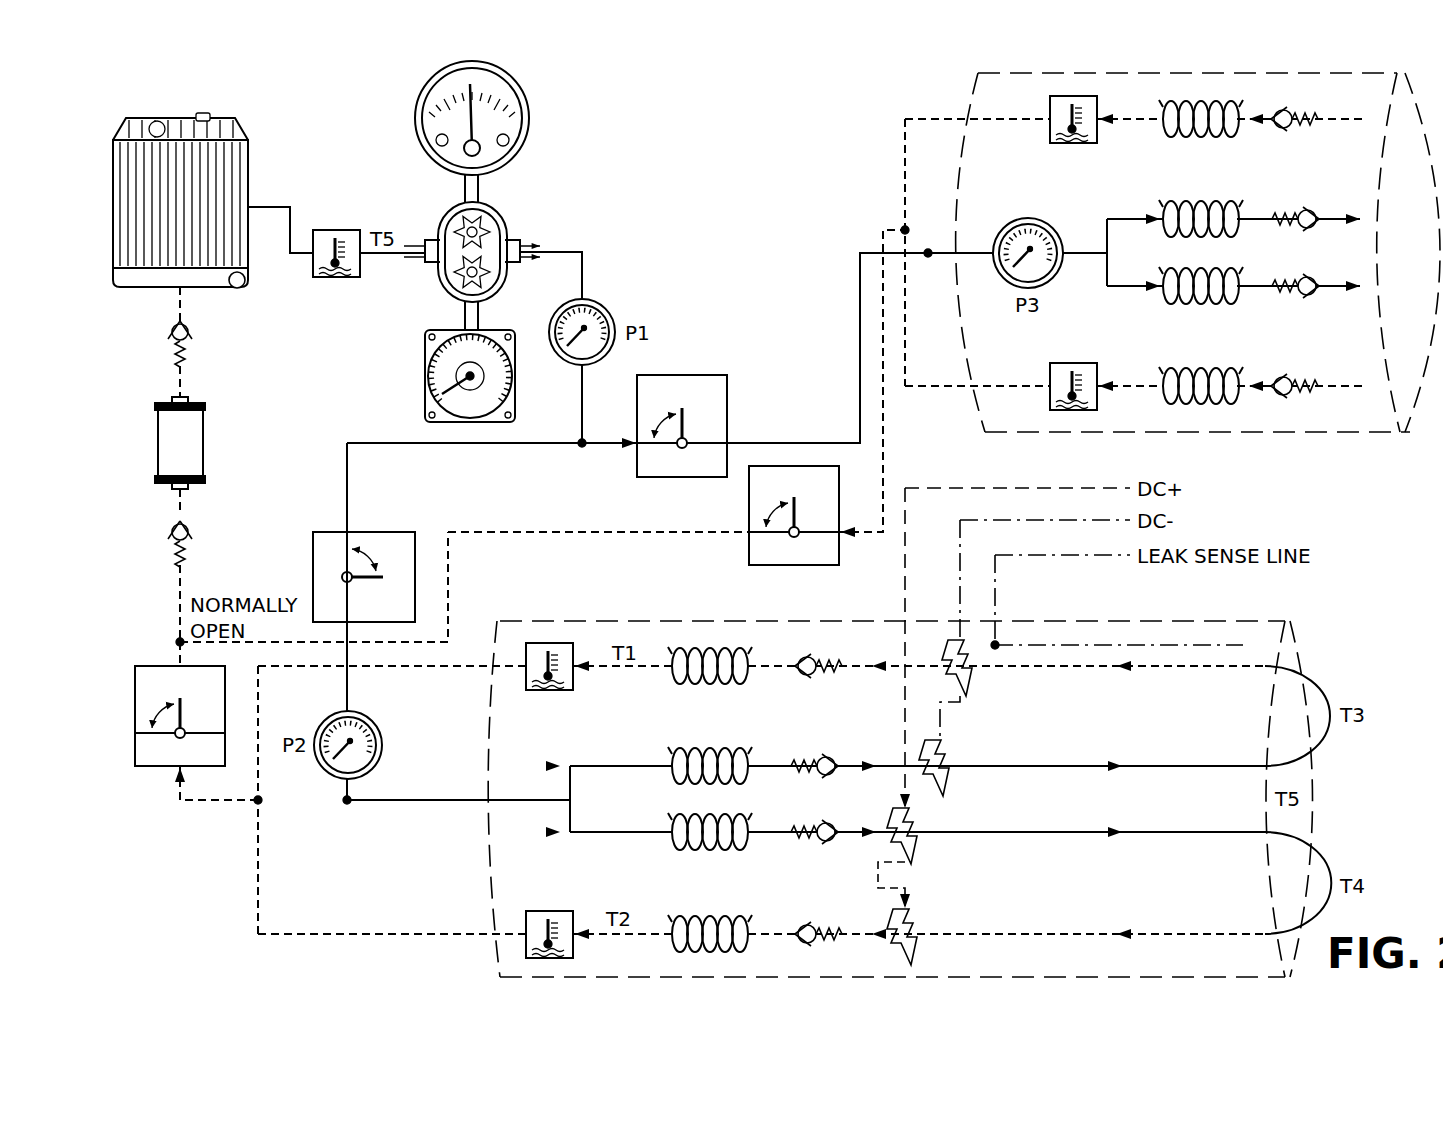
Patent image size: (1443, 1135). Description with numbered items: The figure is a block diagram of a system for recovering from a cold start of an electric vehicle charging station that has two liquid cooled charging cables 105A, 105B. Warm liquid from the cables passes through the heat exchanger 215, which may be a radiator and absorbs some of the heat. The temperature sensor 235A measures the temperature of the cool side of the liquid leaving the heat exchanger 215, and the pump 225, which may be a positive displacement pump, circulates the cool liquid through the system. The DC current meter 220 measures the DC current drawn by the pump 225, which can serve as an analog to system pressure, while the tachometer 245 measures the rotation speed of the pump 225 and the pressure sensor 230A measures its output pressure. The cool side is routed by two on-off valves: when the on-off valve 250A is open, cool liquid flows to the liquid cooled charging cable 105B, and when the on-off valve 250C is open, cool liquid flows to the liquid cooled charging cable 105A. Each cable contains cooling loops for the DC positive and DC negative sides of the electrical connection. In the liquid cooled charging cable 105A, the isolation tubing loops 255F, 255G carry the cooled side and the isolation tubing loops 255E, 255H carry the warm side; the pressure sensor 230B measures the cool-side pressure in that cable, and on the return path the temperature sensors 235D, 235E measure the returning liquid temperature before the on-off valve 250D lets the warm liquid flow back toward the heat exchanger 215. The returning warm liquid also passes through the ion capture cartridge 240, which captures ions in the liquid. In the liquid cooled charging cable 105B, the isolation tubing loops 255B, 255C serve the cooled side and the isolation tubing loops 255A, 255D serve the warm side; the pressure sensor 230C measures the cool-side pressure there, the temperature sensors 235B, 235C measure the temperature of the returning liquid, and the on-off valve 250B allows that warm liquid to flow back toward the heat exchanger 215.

The heat exchanger 215 is at (172, 118).
The DC current meter 220 is at (416, 120).
The pump 225 is at (508, 238).
The pressure sensor 230A is at (602, 308).
The pressure sensor 230B is at (330, 776).
The pressure sensor 230C is at (1020, 220).
The temperature sensor 235A is at (335, 230).
The temperature sensor 235B is at (1073, 143).
The temperature sensor 235C is at (1073, 363).
The temperature sensor 235D is at (548, 690).
The temperature sensor 235E is at (548, 911).
The ion capture cartridge 240 is at (160, 404).
The tachometer 245 is at (425, 378).
The on-off valve 250A is at (683, 375).
The on-off valve 250B is at (750, 553).
The on-off valve 250C is at (380, 532).
The on-off valve 250D is at (172, 768).
The isolation tubing loop 255A is at (1170, 140).
The isolation tubing loop 255B is at (1233, 200).
The isolation tubing loop 255C is at (1170, 305).
The isolation tubing loop 255D is at (1233, 368).
The isolation tubing loop 255E is at (686, 688).
The isolation tubing loop 255F is at (735, 750).
The isolation tubing loop 255G is at (683, 853).
The isolation tubing loop 255H is at (735, 916).
The liquid cooled charging cable 105A is at (1300, 636).
The liquid cooled charging cable 105B is at (1318, 434).